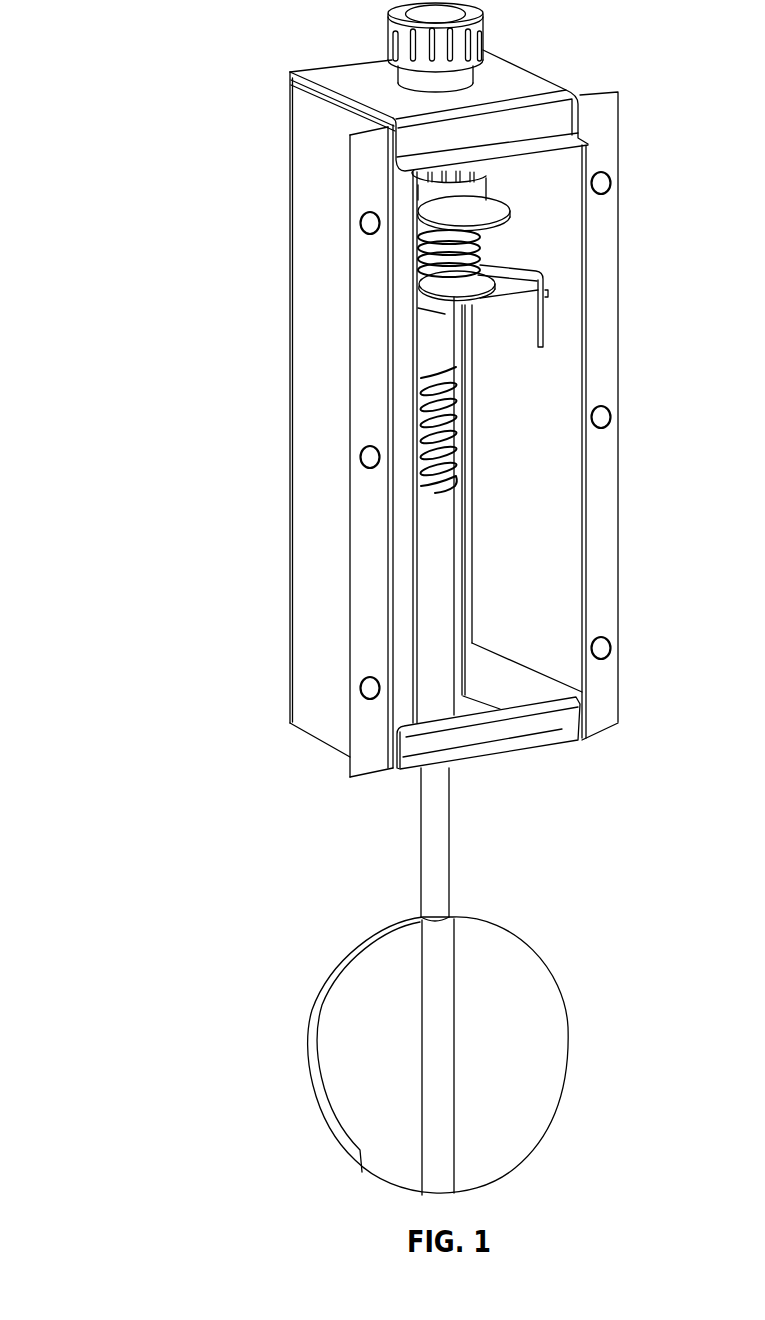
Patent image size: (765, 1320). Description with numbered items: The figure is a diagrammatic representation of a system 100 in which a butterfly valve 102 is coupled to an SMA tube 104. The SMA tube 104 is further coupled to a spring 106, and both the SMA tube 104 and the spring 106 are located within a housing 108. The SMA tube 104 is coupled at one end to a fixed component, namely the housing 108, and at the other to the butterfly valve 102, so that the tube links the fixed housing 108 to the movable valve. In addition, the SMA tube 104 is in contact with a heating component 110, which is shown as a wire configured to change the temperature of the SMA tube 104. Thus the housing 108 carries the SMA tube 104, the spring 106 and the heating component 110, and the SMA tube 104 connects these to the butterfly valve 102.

The system 100 is at (148, 101).
The butterfly valve 102 is at (528, 958).
The SMA tube 104 is at (443, 544).
The spring 106 is at (486, 249).
The housing 108 is at (311, 515).
The heating component 110 is at (420, 393).